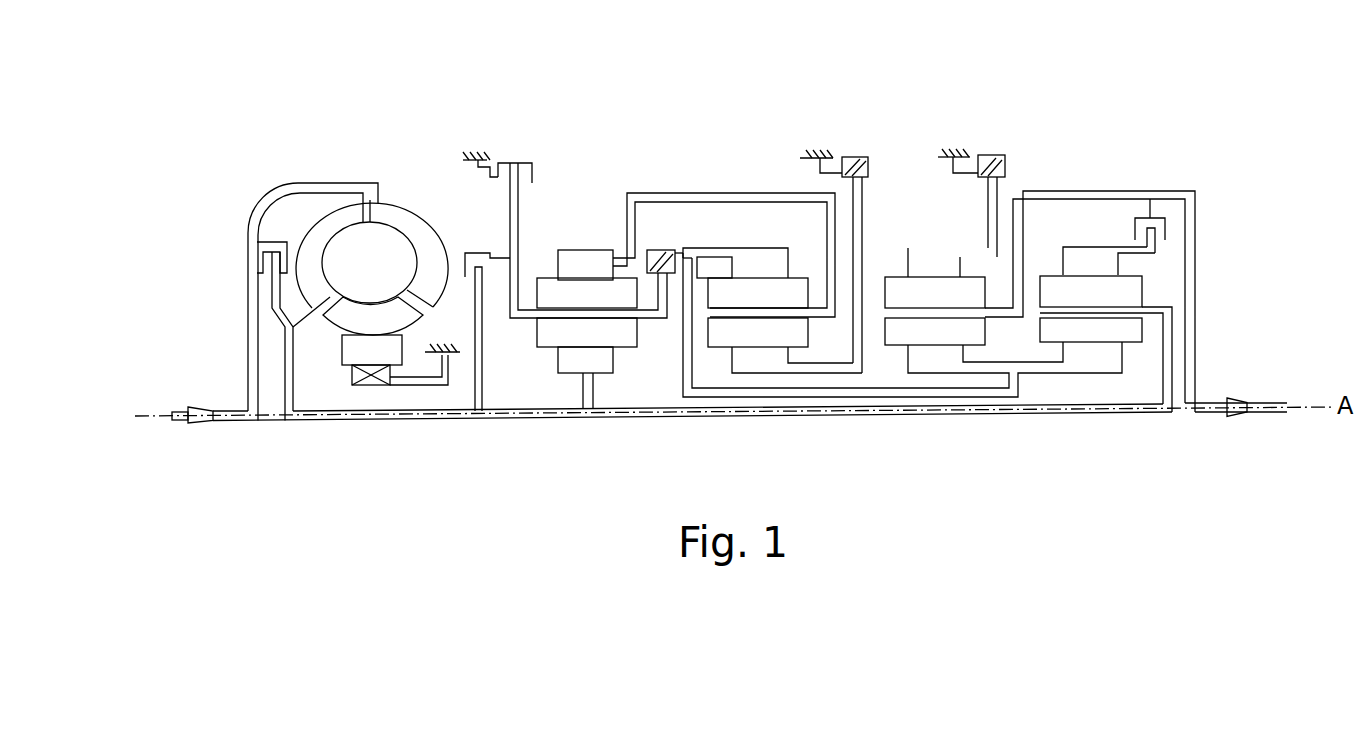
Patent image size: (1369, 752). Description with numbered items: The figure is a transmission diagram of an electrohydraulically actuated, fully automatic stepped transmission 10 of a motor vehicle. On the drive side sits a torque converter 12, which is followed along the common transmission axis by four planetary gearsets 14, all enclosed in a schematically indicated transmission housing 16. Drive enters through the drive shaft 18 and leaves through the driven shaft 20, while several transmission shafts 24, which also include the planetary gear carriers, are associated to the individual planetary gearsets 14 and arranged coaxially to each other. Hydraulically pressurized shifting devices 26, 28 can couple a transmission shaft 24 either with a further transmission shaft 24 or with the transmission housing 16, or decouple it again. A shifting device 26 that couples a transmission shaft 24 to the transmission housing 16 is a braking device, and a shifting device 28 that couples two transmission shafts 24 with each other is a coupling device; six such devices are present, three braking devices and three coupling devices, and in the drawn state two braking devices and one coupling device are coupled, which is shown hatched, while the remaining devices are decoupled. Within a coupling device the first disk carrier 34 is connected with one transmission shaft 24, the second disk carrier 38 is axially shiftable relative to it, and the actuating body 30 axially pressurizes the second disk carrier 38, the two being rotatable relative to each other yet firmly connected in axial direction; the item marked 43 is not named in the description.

The stepped transmission 10 is at (1080, 78).
The torque converter 12 is at (398, 178).
The planetary gearsets 14 is at (546, 378).
The transmission housing 16 is at (468, 148).
The drive shaft 18 is at (220, 422).
The driven shaft 20 is at (1238, 422).
The transmission shafts 24 is at (772, 193).
The shifting device (braking device) 26 is at (513, 156).
The shifting device (coupling device) 28 is at (473, 233).
The actuating body 30 is at (1152, 208).
The first disk carrier 34 is at (728, 167).
The second disk carrier 38 is at (515, 212).
The actuating element of clutch 43 is at (1151, 240).